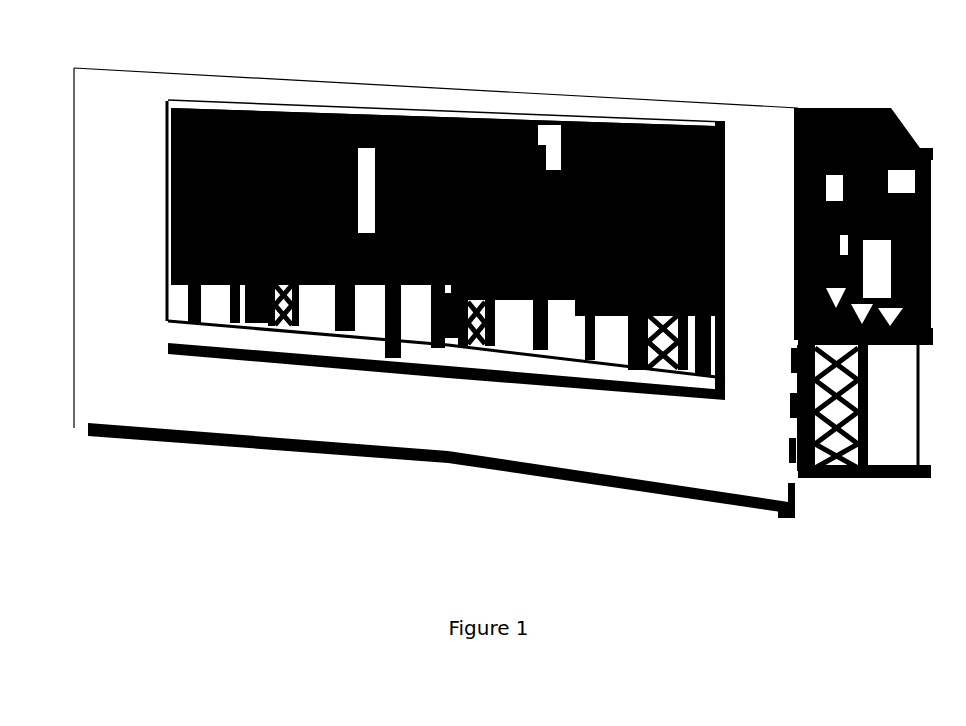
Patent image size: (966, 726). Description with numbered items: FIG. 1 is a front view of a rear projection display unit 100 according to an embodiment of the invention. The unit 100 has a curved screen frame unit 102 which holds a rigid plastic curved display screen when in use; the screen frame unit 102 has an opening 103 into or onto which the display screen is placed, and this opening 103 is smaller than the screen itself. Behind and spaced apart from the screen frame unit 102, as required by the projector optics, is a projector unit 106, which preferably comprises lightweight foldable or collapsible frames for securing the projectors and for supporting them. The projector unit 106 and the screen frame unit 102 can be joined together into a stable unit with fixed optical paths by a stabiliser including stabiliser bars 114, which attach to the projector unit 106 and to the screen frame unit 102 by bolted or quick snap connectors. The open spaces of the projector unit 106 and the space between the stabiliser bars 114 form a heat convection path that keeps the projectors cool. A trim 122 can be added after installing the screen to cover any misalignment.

The rear projection display unit 100 is at (394, 488).
The curved screen frame unit 102 is at (321, 455).
The opening 103 is at (347, 313).
The projector unit 106 is at (913, 98).
The stabiliser bars 114 is at (646, 85).
The trim 122 is at (484, 98).